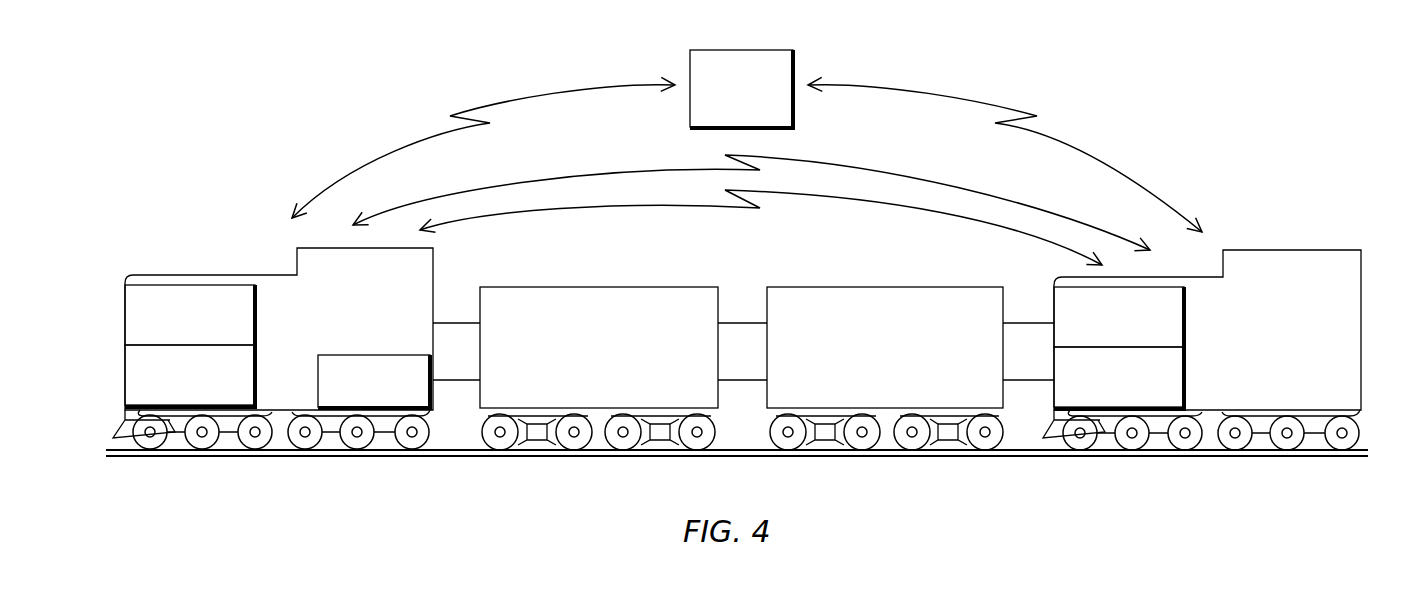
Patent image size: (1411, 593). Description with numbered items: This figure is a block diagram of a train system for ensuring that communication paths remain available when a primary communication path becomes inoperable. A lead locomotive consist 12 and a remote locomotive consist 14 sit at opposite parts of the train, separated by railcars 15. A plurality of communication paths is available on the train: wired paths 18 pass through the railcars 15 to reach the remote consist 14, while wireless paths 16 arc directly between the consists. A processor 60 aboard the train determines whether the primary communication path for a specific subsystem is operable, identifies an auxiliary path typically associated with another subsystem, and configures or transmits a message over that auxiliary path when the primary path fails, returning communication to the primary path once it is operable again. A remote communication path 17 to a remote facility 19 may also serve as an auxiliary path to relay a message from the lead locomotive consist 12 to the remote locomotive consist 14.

The lead locomotive consist 12 is at (217, 273).
The remote locomotive consist 14 is at (1293, 250).
The railcars 15 is at (553, 287).
The wireless communication paths 16 is at (887, 167).
The remote communication path 17 is at (385, 153).
The wired communication paths 18 is at (457, 323).
The remote facility 19 is at (757, 50).
The processor 60 is at (355, 355).